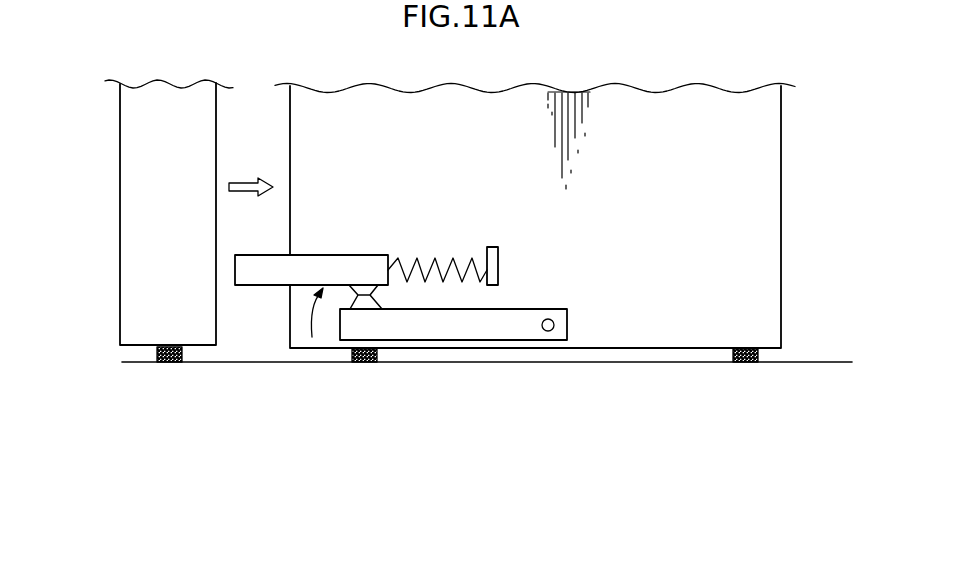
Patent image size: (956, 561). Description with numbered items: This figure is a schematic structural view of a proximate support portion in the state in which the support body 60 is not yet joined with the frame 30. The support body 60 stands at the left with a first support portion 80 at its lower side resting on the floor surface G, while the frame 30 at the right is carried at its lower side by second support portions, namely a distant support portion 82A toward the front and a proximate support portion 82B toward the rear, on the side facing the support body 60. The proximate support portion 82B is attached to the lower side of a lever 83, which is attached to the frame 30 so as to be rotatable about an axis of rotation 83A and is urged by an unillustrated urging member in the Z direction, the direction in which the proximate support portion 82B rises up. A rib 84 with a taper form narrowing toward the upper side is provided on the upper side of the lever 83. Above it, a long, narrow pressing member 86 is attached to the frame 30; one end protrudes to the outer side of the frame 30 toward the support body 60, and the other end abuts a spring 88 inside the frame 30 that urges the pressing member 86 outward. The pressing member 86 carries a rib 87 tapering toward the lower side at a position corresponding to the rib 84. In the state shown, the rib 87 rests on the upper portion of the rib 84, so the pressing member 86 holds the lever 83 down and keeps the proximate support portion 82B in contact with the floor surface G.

The support body 60 is at (120, 198).
The frame 30 is at (782, 195).
The first support portion 80 is at (152, 348).
The distant support portion 82A is at (726, 350).
The proximate support portion 82B is at (350, 352).
The lever 83 is at (522, 340).
The axis of rotation 83A is at (554, 325).
The rib 84 is at (380, 300).
The pressing member 86 is at (250, 285).
The rib 87 is at (348, 286).
The spring 88 is at (485, 285).
The floor surface G is at (800, 362).
The Z direction Z is at (308, 312).